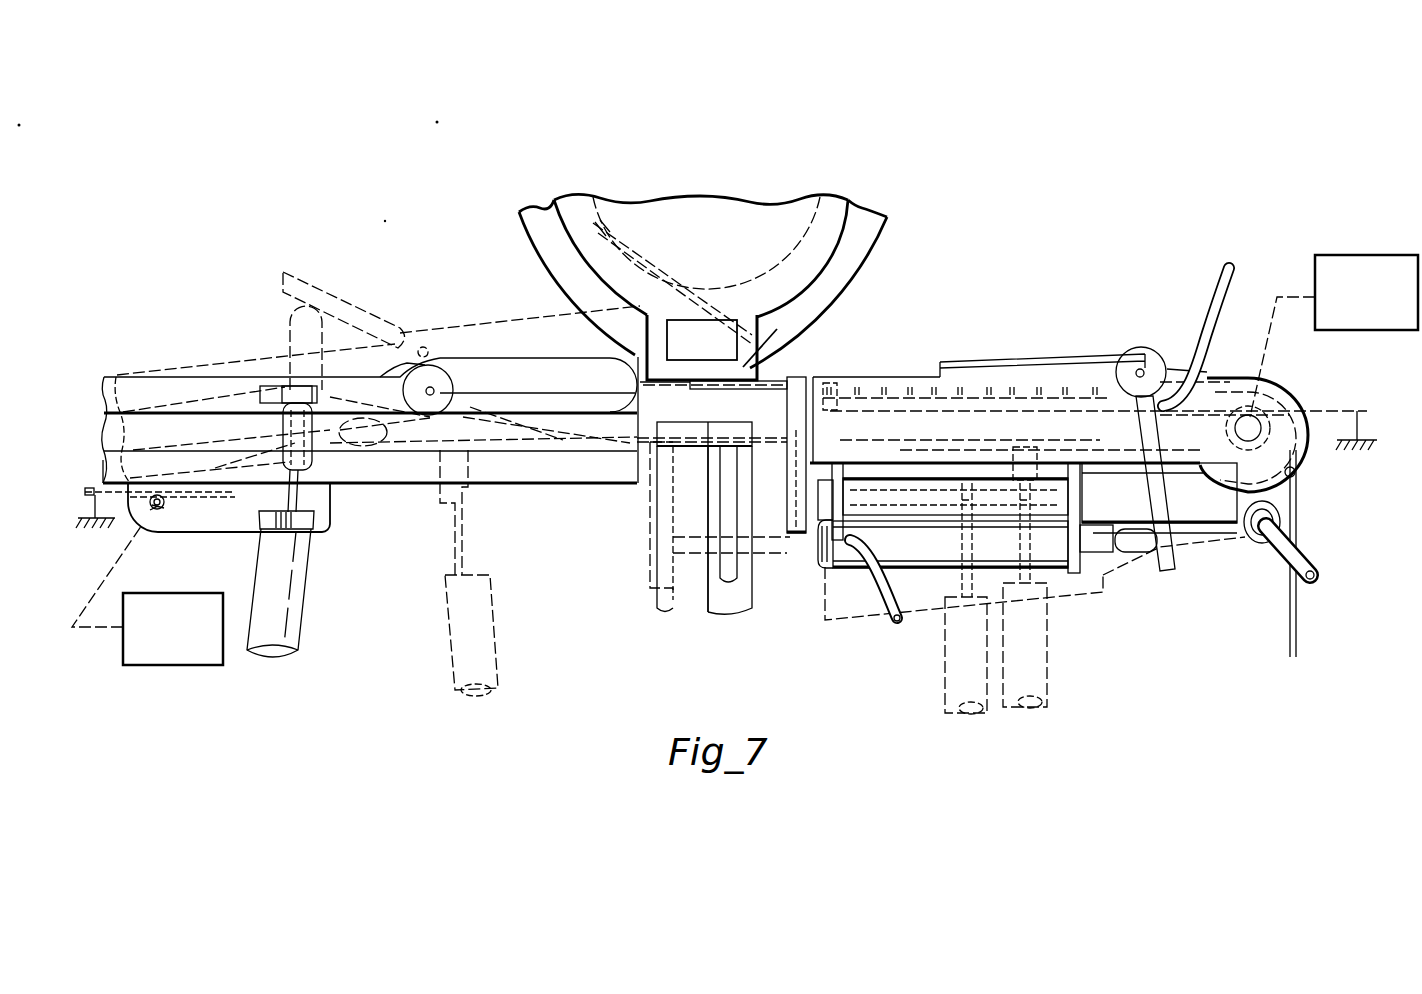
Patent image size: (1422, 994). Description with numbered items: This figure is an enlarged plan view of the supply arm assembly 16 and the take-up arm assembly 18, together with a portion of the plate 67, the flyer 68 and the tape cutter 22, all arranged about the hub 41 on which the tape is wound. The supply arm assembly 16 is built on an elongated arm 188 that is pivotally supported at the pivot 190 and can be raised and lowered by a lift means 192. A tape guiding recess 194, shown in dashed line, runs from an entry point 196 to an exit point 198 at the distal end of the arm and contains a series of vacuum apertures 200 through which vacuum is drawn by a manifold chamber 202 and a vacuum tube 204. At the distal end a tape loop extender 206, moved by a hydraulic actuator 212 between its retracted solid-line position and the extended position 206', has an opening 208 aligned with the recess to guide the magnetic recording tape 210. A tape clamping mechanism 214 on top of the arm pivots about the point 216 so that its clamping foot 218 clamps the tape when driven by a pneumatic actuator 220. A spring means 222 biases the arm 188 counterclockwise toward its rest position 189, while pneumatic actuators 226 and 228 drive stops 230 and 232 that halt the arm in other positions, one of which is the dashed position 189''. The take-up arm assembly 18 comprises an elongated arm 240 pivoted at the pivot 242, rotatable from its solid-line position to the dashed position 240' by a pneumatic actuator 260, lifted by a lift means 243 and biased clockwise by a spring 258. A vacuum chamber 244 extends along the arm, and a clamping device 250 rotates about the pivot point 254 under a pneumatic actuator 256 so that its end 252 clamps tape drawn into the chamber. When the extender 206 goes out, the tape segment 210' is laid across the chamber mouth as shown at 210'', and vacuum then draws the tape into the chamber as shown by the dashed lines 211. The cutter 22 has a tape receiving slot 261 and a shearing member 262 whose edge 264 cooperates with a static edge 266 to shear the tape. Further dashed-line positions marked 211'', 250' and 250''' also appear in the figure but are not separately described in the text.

The supply arm assembly 16 is at (1130, 572).
The take-up arm assembly 18 is at (356, 548).
The tape cutter 22 is at (650, 565).
The hub 41 is at (873, 222).
The plate 67 is at (828, 200).
The flyer 68 is at (771, 338).
The elongated arm 188 is at (1113, 442).
The rest position of arm 188 189 is at (943, 572).
The second stopped position of arm 188 189'' is at (929, 426).
The pivot 190 is at (1235, 428).
The lift means 192 is at (1373, 255).
The tape guiding recess 194 is at (845, 378).
The entry point 196 is at (1296, 474).
The exit point 198 is at (812, 374).
The vacuum apertures 200 is at (910, 362).
The manifold chamber 202 is at (1038, 420).
The vacuum tube 204 is at (1208, 293).
The tape loop extender 206 is at (757, 530).
The extended position of extender 206' is at (633, 475).
The opening 208 is at (793, 383).
The magnetic recording tape 210 is at (996, 486).
The tape segment 210' is at (706, 245).
The tape segment position across chamber mouth 210'' is at (672, 282).
The tape drawn into vacuum chamber 211 is at (426, 432).
The bag position 211'' is at (821, 455).
The hydraulic actuator 212 is at (1143, 511).
The tape clamping mechanism 214 is at (1090, 362).
The pivot point 216 is at (1144, 371).
The clamping foot 218 is at (938, 376).
The pneumatic actuator 220 is at (987, 550).
The spring means 222 is at (1330, 410).
The pneumatic actuator 226 is at (945, 670).
The pneumatic actuator 228 is at (1047, 687).
The stop 230 is at (962, 461).
The stop 232 is at (1016, 468).
The elongated arm 240 is at (259, 508).
The second position of arm 240 240' is at (520, 329).
The pivot 242 is at (162, 507).
The lift means 243 is at (177, 593).
The vacuum chamber 244 is at (125, 427).
The clamping device 250 is at (432, 351).
The arm phantom 250' is at (256, 392).
The arm phantom 250''' is at (344, 295).
The end of clamping device 252 is at (558, 408).
The pivot point 254 is at (433, 391).
The pneumatic actuator 256 is at (308, 622).
The spring 258 is at (112, 470).
The pneumatic actuator 260 is at (492, 600).
The tape receiving slot 261 is at (658, 463).
The shearing member 262 is at (712, 502).
The edge 264 is at (712, 452).
The static edge 266 is at (703, 433).